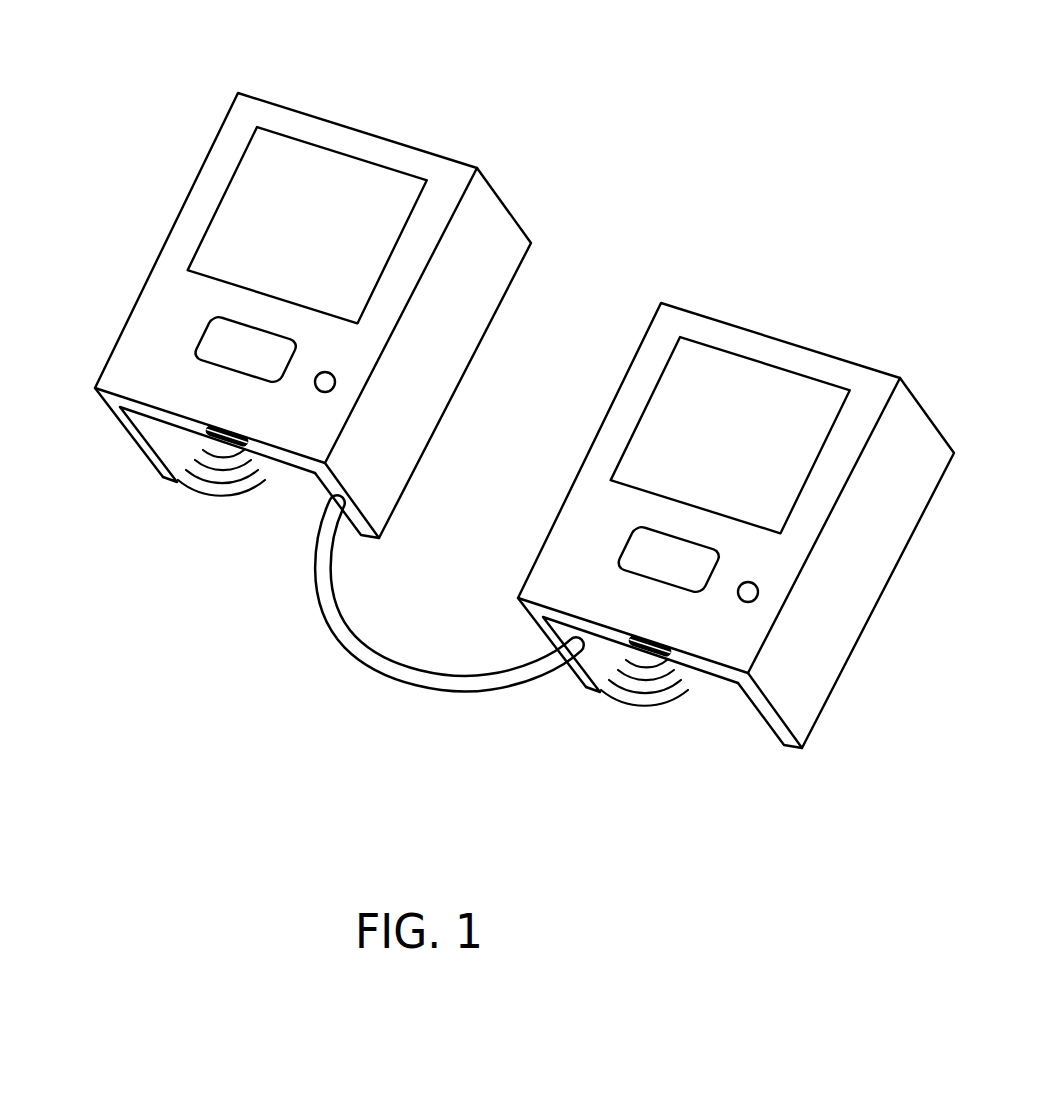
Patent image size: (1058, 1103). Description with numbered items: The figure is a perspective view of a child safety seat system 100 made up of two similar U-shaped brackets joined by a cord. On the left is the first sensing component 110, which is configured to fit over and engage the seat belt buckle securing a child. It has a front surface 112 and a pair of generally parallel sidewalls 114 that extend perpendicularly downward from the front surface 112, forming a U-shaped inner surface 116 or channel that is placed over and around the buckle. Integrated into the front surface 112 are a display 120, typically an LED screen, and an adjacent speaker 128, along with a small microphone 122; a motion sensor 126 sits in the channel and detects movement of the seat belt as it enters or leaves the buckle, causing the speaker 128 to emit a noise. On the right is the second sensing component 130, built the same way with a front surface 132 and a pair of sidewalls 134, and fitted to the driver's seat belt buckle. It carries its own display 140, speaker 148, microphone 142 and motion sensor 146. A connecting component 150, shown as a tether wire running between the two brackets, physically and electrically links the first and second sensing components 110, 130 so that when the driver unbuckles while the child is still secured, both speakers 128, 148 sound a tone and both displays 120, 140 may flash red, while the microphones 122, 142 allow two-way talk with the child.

The child safety seat system 100 is at (258, 705).
The first sensing component 110 is at (613, 133).
The front surface 112 is at (243, 110).
The pair of generally parallel sidewalls 114 is at (420, 400).
The U-shaped inner surface 116 is at (323, 490).
The display 120 is at (370, 197).
The microphone 122 is at (326, 374).
The motion sensor 126 is at (247, 440).
The speaker 128 is at (226, 341).
The second sensing component 130 is at (863, 203).
The front surface 132 is at (682, 323).
The pair of generally parallel sidewalls 134 is at (837, 575).
The display 140 is at (775, 438).
The microphone 142 is at (760, 592).
The motion sensor 146 is at (663, 655).
The speaker 148 is at (687, 580).
The connecting component 150 is at (385, 662).